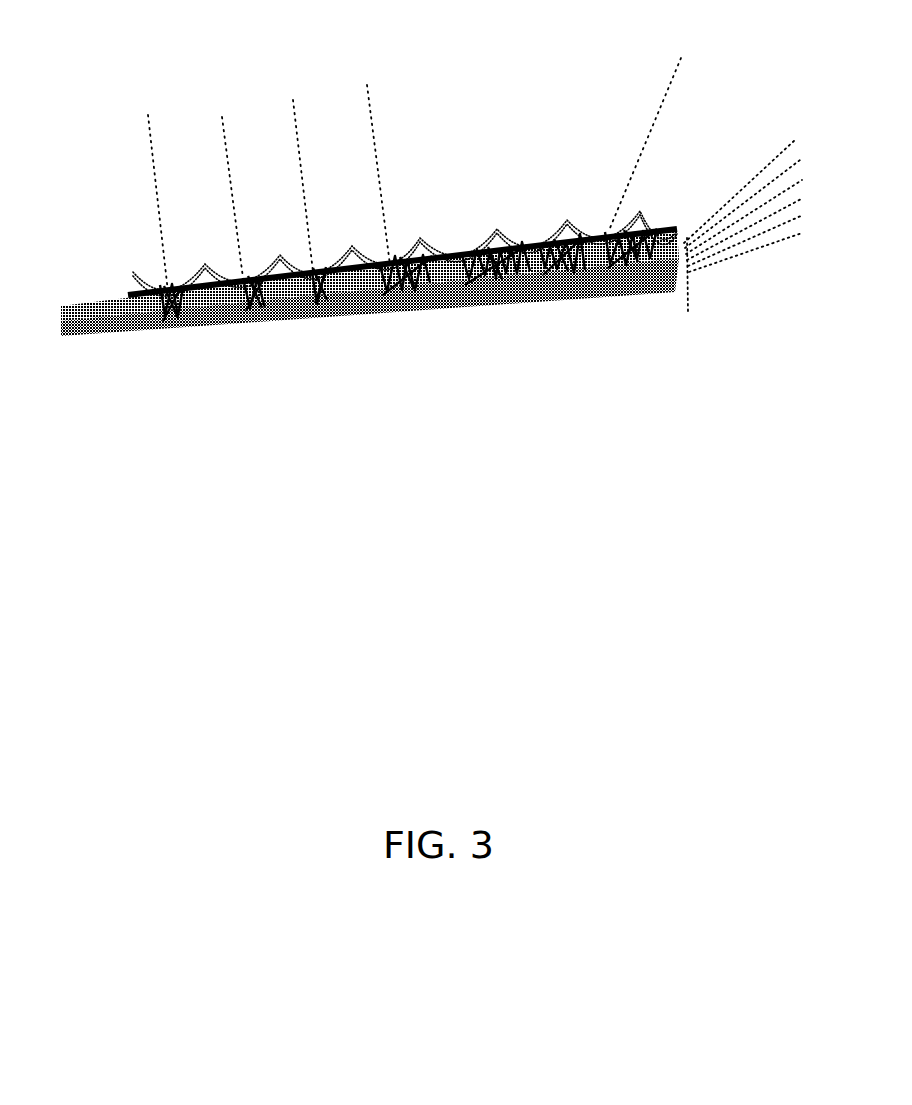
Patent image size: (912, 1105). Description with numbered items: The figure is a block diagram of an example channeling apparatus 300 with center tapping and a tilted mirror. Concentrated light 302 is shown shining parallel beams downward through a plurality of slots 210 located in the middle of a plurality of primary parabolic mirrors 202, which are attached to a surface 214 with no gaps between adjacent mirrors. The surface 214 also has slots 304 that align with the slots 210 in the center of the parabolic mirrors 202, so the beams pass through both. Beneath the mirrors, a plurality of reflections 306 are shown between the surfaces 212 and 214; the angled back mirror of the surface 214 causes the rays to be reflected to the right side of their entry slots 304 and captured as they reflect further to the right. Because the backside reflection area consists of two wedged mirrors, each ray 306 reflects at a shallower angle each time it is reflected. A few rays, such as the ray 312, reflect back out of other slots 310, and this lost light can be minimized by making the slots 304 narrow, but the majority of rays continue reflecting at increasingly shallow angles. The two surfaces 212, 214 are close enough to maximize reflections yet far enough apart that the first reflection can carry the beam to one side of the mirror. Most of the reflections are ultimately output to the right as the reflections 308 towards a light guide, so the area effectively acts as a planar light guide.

The channeling apparatus 300 is at (456, 816).
The primary parabolic mirrors 202 is at (200, 298).
The slots 210 is at (243, 283).
The surface 212 is at (608, 288).
The surface 214 is at (280, 300).
The concentrated light 302 is at (365, 100).
The slots 304 is at (385, 310).
The reflections 306 is at (618, 290).
The reflections 308 is at (730, 222).
The slots 310 is at (610, 235).
The ray 312 is at (681, 60).